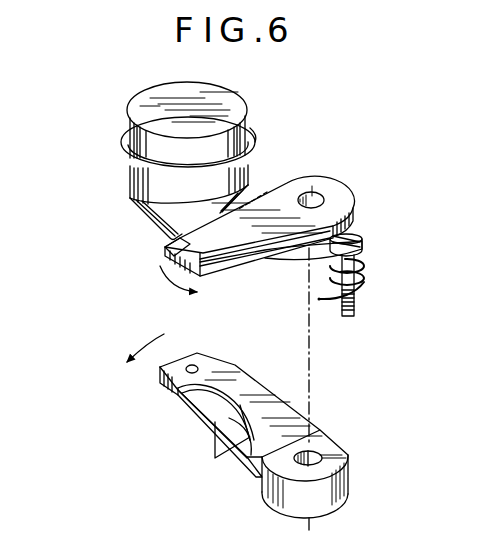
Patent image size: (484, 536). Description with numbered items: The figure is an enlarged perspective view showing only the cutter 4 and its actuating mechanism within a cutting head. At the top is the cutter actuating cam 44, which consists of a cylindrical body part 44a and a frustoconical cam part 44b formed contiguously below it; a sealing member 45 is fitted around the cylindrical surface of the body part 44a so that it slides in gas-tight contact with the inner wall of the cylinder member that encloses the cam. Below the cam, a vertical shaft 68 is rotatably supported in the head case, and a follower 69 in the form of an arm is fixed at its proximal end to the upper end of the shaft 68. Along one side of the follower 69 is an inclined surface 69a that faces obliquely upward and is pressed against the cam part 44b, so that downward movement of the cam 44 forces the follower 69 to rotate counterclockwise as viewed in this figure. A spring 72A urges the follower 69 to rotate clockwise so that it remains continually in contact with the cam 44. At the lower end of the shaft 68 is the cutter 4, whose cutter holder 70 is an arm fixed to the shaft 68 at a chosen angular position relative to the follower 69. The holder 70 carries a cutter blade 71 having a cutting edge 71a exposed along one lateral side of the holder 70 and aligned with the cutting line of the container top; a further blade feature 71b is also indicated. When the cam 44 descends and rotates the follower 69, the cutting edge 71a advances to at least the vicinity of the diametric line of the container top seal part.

The cutter actuating cam 44 is at (137, 105).
The cylindrical body part 44a is at (142, 168).
The cam part 44b is at (147, 206).
The sealing member 45 is at (253, 136).
The follower 69 is at (258, 205).
The inclined surface 69a is at (172, 243).
The spring 72A is at (280, 254).
The vertical shaft 68 is at (311, 348).
The cutter holder 70 is at (267, 406).
The cutter blade 71 is at (205, 408).
The cutting edge 71a is at (205, 430).
The slot surface 71b is at (223, 456).
The cutter 4 is at (201, 442).